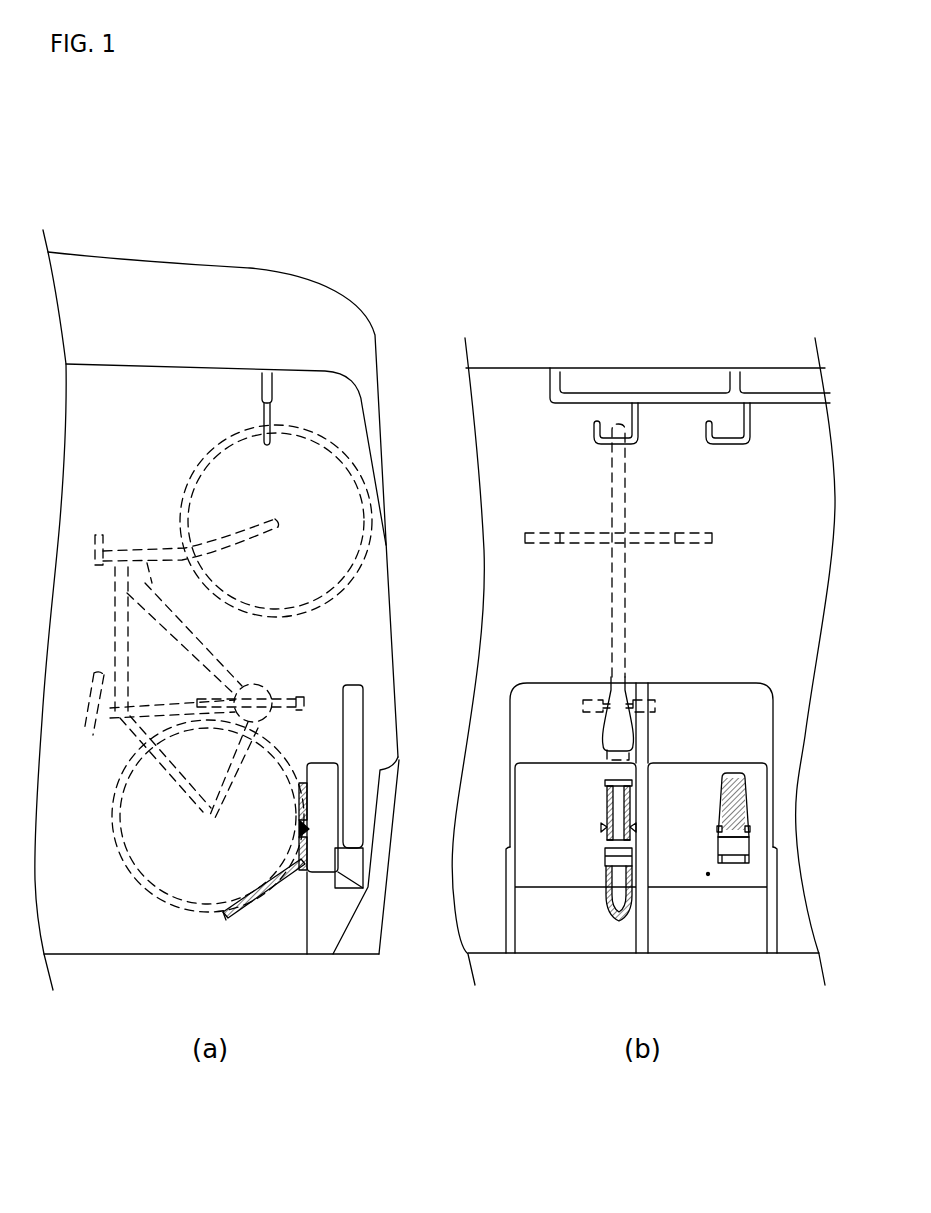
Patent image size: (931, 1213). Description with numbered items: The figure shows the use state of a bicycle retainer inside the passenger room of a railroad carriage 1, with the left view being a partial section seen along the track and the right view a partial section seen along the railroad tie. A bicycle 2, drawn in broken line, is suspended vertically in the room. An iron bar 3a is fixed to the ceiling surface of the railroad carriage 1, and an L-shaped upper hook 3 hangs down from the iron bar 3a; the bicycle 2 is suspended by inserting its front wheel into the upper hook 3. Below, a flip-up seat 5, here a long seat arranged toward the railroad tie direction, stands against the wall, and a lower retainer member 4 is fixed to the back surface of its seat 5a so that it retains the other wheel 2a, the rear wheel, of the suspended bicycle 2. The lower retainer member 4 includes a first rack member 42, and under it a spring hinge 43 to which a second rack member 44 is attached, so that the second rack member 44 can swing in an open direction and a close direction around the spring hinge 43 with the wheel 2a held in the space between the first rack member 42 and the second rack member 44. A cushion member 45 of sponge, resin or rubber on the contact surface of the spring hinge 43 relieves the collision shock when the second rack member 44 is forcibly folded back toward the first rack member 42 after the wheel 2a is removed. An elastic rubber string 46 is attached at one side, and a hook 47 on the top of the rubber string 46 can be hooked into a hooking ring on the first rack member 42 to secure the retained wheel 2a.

The railroad carriage 1 is at (381, 268).
The bicycle 2 is at (291, 676).
The wheel 2a is at (130, 872).
The upper hook 3 is at (270, 418).
The iron bar 3a is at (262, 390).
The lower retainer member 4 is at (284, 893).
The flip-up seat 5 is at (374, 705).
The seat 5a is at (327, 770).
The first rack member 42 is at (299, 805).
The spring hinge 43 is at (308, 870).
The second rack member 44 is at (262, 890).
The cushion member 45 is at (605, 847).
The rubber string 46 is at (299, 830).
The hook 47 is at (708, 874).